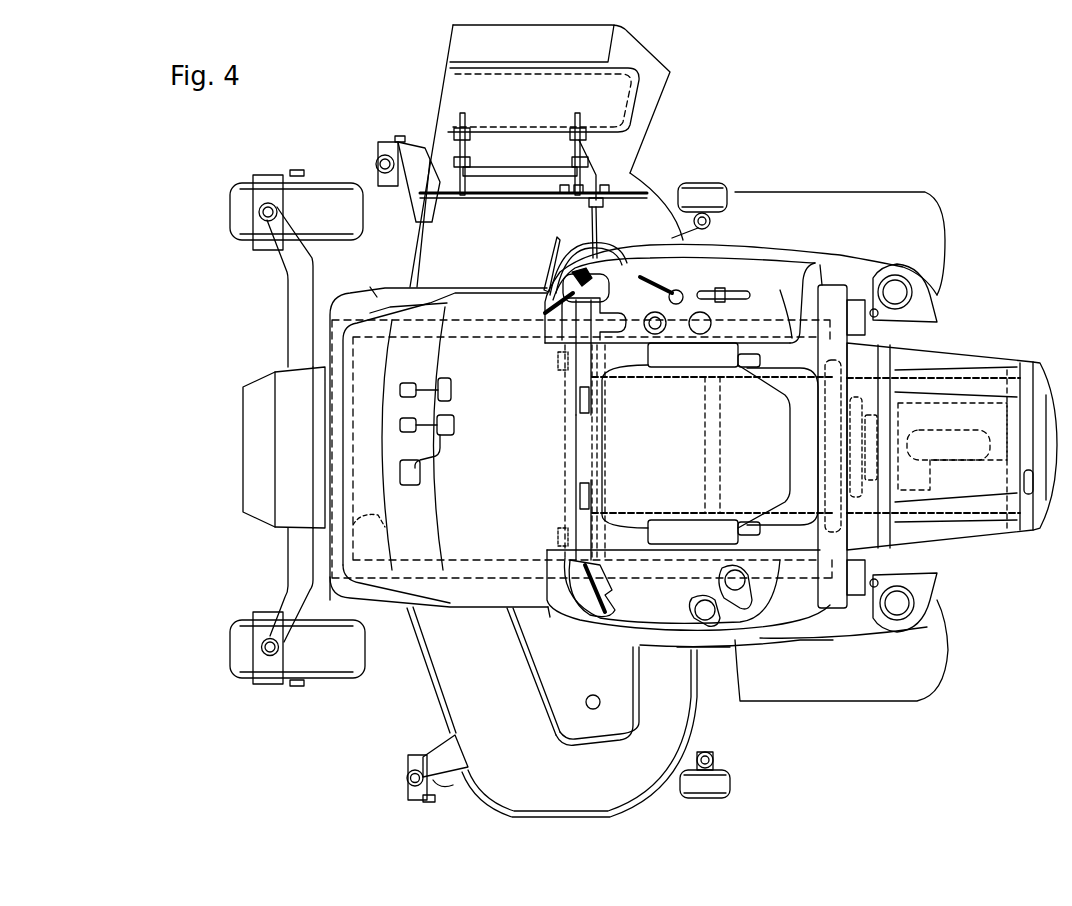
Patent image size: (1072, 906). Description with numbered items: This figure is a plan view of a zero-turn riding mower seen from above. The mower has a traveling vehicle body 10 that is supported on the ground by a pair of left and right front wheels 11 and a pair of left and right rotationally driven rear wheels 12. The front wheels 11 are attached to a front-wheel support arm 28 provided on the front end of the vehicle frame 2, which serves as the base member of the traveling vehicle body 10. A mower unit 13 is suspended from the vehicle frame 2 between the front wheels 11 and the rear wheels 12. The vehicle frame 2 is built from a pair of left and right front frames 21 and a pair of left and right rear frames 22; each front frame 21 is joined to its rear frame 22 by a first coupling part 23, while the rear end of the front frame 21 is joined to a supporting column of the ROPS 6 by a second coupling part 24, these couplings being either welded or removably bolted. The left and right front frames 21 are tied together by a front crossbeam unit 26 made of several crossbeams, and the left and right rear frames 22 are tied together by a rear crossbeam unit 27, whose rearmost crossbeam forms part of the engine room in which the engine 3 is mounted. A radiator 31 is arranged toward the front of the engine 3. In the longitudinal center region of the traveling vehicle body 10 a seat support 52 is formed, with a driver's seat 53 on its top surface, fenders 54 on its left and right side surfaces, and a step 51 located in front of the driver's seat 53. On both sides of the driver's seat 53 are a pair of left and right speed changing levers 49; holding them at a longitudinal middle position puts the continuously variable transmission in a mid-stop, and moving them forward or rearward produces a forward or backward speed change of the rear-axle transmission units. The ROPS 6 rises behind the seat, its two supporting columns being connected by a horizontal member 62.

The vehicle frame 2 is at (328, 328).
The engine 3 is at (987, 395).
The ROPS 6 is at (848, 282).
The traveling vehicle body 10 is at (237, 424).
The front wheels 11 is at (235, 213).
The rear wheels 12 is at (912, 205).
The mower unit 13 is at (428, 685).
The front frames 21 is at (493, 313).
The rear frames 22 is at (950, 368).
The first coupling part 23 is at (556, 362).
The second coupling part 24 is at (745, 300).
The front crossbeam unit 26 is at (385, 527).
The rear crossbeam unit 27 is at (704, 445).
The front-wheel support arm 28 is at (288, 560).
The radiator 31 is at (815, 490).
The speed changing levers 49 is at (590, 398).
The step 51 is at (410, 352).
The seat support 52 is at (575, 465).
The driver's seat 53 is at (578, 425).
The fenders 54 is at (800, 285).
The horizontal member 62 is at (818, 410).